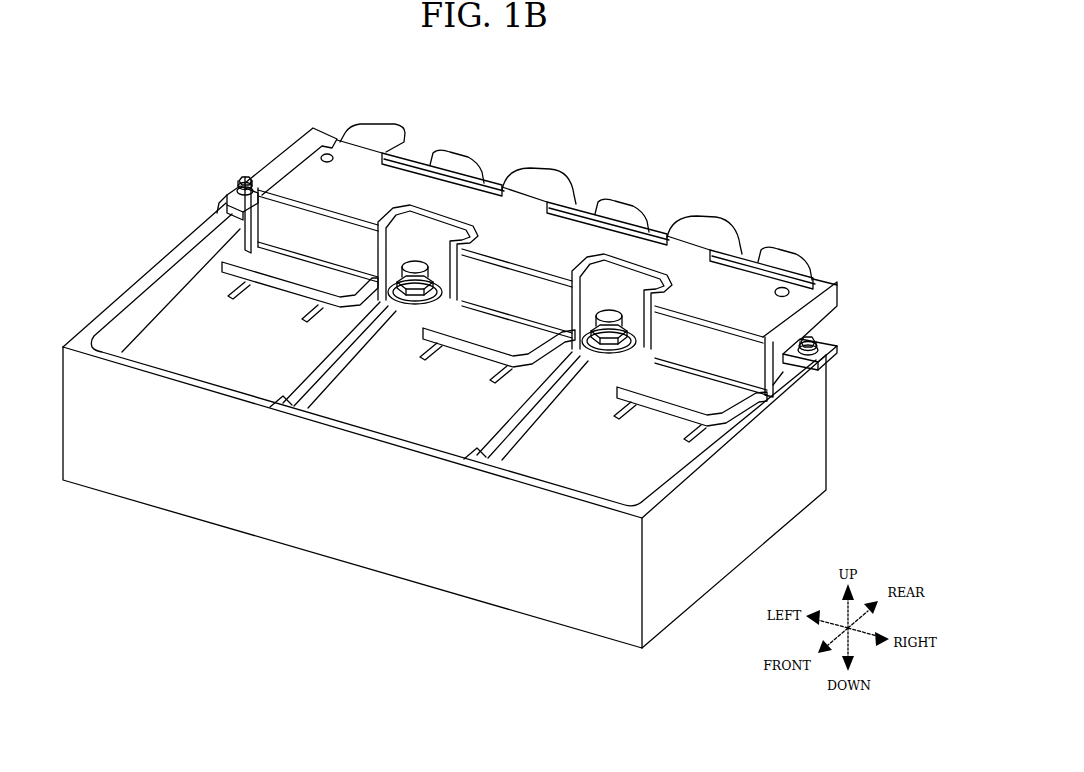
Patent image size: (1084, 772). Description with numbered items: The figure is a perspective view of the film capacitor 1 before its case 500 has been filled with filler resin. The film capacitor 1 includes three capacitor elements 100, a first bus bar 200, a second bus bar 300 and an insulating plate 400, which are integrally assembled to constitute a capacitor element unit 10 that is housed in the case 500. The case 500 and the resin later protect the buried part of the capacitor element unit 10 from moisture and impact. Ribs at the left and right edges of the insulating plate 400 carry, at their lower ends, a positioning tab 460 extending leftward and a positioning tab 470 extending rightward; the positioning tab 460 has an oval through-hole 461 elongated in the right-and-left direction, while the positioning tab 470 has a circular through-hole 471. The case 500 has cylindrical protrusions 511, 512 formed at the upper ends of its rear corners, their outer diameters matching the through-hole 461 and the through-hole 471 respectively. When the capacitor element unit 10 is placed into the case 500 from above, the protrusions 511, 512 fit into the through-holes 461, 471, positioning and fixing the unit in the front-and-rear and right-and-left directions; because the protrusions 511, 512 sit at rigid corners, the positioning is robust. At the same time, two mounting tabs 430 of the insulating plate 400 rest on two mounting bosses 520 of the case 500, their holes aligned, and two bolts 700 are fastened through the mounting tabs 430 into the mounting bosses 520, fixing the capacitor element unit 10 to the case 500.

The film capacitor 1 is at (832, 172).
The capacitor element unit 10 is at (503, 170).
The capacitor element 100 is at (130, 347).
The first bus bar 200 is at (725, 270).
The second bus bar 300 is at (820, 258).
The insulating plate 400 is at (300, 128).
The mounting tab 430 is at (443, 308).
The positioning tab 460 is at (228, 198).
The oval through-hole 461 is at (242, 184).
The positioning tab 470 is at (838, 356).
The circular through-hole 471 is at (830, 346).
The case 500 is at (812, 468).
The cylindrical protrusion 511 is at (238, 178).
The cylindrical protrusion 512 is at (820, 340).
The mounting boss 520 is at (411, 325).
The bolt 700 is at (416, 262).